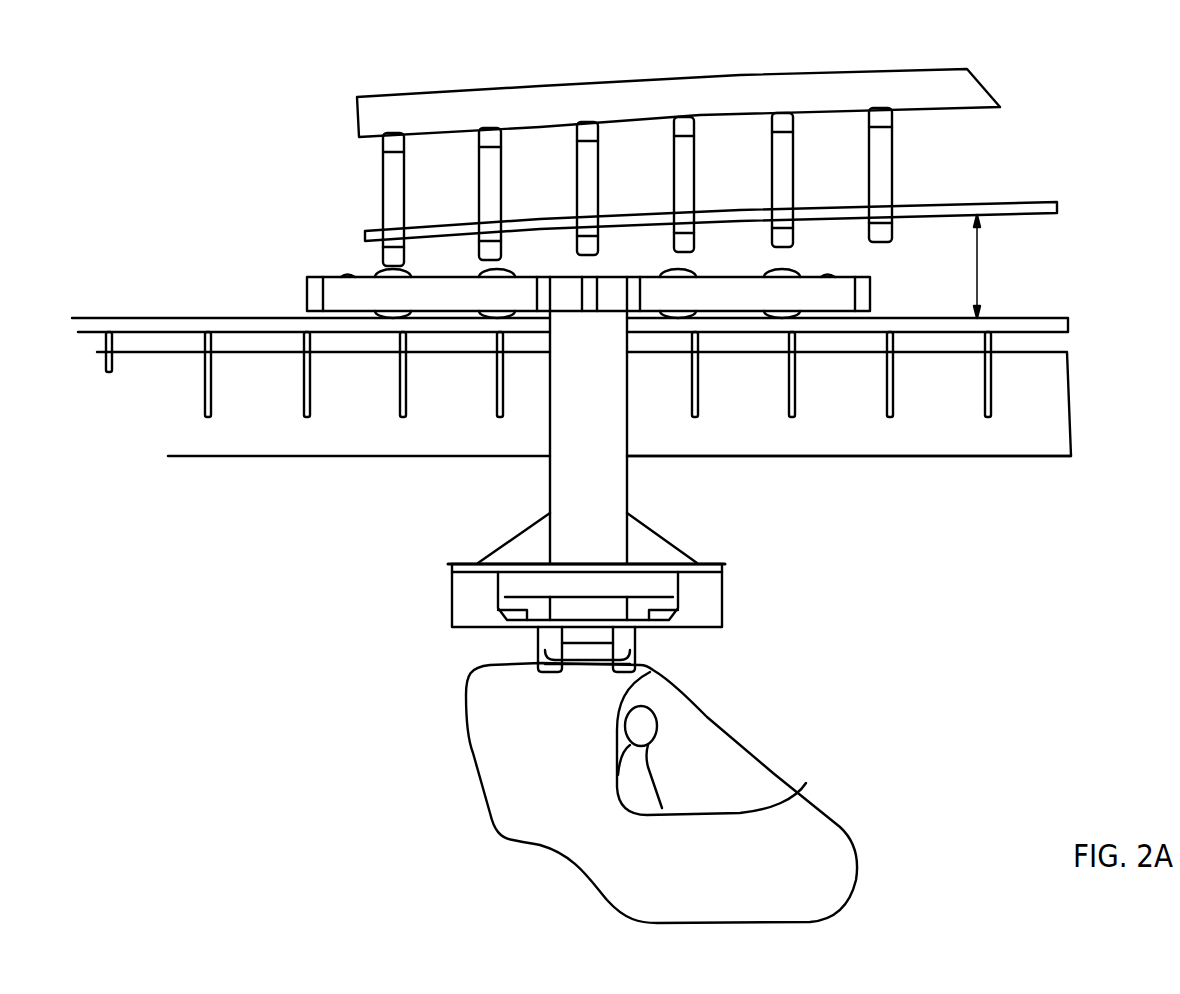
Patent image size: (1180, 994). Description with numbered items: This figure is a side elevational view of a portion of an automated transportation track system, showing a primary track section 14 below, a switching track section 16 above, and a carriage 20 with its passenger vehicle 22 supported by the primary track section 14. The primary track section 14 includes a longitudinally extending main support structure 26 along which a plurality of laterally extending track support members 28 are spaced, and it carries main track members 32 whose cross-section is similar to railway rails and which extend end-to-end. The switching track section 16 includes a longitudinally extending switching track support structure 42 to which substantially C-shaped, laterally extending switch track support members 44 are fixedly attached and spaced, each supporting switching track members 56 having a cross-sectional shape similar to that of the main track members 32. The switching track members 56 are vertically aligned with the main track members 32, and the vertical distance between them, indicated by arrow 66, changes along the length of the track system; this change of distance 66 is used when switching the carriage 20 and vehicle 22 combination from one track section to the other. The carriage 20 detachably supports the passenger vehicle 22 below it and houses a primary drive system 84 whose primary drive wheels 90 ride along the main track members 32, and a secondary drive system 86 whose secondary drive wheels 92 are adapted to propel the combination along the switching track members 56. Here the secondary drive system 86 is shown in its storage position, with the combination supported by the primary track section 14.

The primary track section 14 is at (626, 416).
The switching track section 16 is at (707, 82).
The carriage 20 is at (629, 272).
The passenger vehicle 22 is at (763, 721).
The main support structure 26 is at (958, 456).
The track support members 28 is at (990, 378).
The main track members 32 is at (1047, 317).
The switching track support structures 42 is at (922, 82).
The switch track support members 44 is at (893, 156).
The switching track members 56 is at (1042, 198).
The vertical distance 66 is at (979, 273).
The primary drive system 84 is at (805, 263).
The secondary drive system 86 is at (697, 264).
The primary drive wheels 90 is at (773, 270).
The secondary drive wheels 92 is at (672, 270).